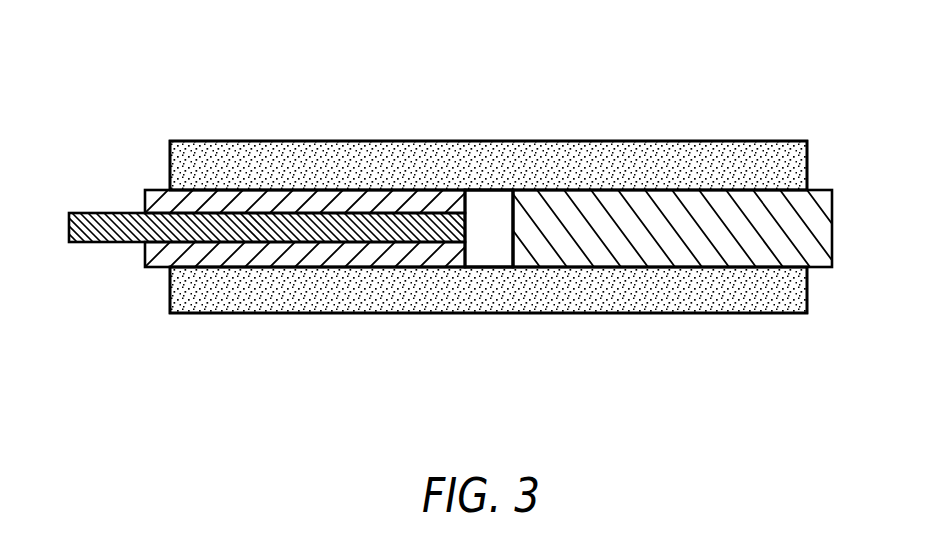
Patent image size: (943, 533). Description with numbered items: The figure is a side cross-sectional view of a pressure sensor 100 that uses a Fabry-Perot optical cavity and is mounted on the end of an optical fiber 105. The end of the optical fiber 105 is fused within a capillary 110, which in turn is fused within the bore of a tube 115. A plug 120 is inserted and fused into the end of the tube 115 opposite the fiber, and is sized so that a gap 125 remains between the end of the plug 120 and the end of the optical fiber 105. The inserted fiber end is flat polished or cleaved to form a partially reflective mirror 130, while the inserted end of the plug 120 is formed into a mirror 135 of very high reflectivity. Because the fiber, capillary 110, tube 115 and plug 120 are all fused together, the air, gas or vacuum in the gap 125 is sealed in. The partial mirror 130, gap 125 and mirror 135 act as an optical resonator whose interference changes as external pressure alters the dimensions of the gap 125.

The pressure sensor 100 is at (838, 146).
The optical fiber 105 is at (93, 243).
The capillary 110 is at (243, 267).
The tube 115 is at (357, 313).
The plug 120 is at (685, 240).
The gap 125 is at (490, 208).
The partially reflective mirror 130 is at (466, 225).
The mirror 135 is at (515, 225).